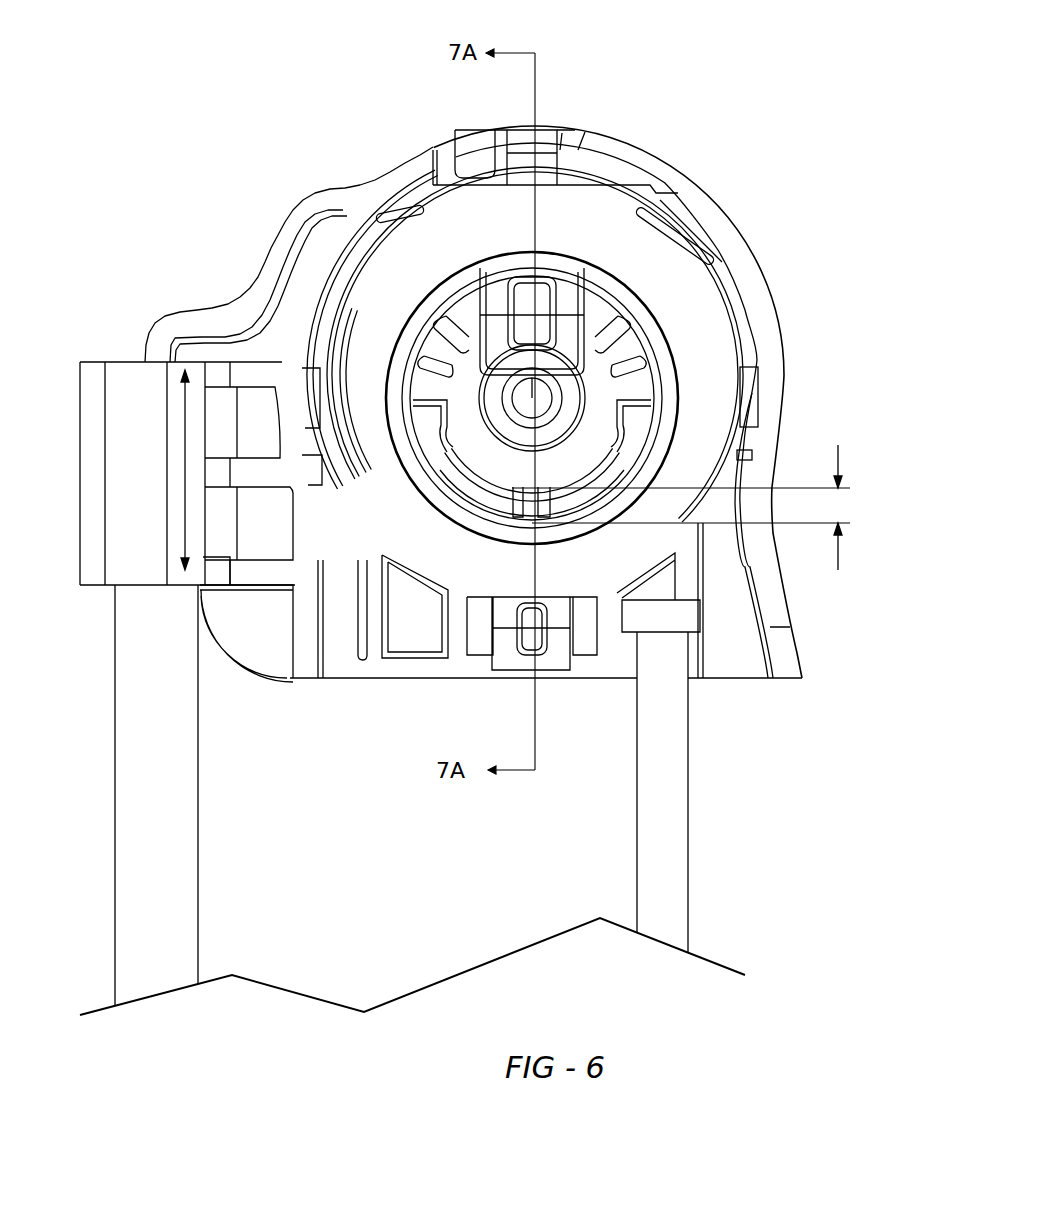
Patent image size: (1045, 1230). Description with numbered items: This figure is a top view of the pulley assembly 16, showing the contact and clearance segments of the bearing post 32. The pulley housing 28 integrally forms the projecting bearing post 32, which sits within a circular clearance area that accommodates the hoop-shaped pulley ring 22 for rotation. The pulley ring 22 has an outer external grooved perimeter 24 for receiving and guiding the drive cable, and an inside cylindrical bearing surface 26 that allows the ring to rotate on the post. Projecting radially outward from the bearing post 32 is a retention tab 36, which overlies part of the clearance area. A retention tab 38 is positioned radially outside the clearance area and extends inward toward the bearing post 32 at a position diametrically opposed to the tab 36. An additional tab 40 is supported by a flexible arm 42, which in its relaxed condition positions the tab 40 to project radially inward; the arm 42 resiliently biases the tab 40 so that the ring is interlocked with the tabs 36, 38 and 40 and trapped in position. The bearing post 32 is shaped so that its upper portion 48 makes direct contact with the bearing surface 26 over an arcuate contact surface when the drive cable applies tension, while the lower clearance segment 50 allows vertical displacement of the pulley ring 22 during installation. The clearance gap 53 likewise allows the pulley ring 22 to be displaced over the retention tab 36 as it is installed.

The pulley assembly 16 is at (415, 77).
The pulley ring 22 is at (578, 227).
The outer external grooved perimeter 24 is at (768, 435).
The inside cylindrical bearing surface 26 is at (660, 377).
The pulley housing 28 is at (773, 297).
The bearing post 32 is at (620, 337).
The retention tab 36 is at (498, 302).
The retention tab 38 is at (558, 658).
The tab 40 is at (515, 172).
The flexible arm 42 is at (600, 133).
The upper portion 48 is at (580, 283).
The lower clearance segment 50 is at (497, 483).
The clearance gap 53 is at (838, 555).